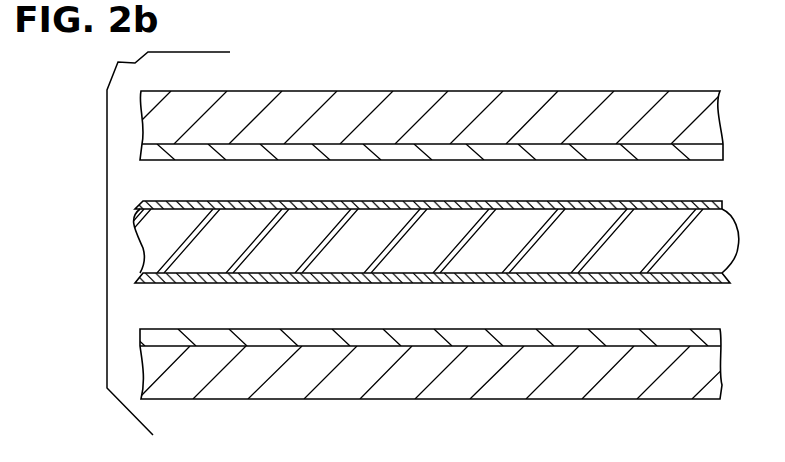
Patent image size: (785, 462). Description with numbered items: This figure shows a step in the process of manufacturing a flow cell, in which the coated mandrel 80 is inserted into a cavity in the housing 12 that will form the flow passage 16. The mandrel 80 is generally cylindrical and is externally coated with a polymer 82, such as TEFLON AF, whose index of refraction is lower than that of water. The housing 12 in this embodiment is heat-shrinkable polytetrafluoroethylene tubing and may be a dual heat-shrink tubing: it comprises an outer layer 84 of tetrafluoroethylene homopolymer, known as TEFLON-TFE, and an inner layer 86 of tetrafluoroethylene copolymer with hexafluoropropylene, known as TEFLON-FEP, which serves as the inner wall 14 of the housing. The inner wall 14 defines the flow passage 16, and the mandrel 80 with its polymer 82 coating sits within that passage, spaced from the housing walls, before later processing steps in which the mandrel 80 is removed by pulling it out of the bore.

The housing 12 is at (411, 243).
The inner wall 14 is at (208, 328).
The flow passage 16 is at (437, 191).
The mandrel 80 is at (655, 235).
The polymer 82 is at (548, 202).
The outer layer 84 is at (255, 102).
The inner layer 86 is at (215, 165).